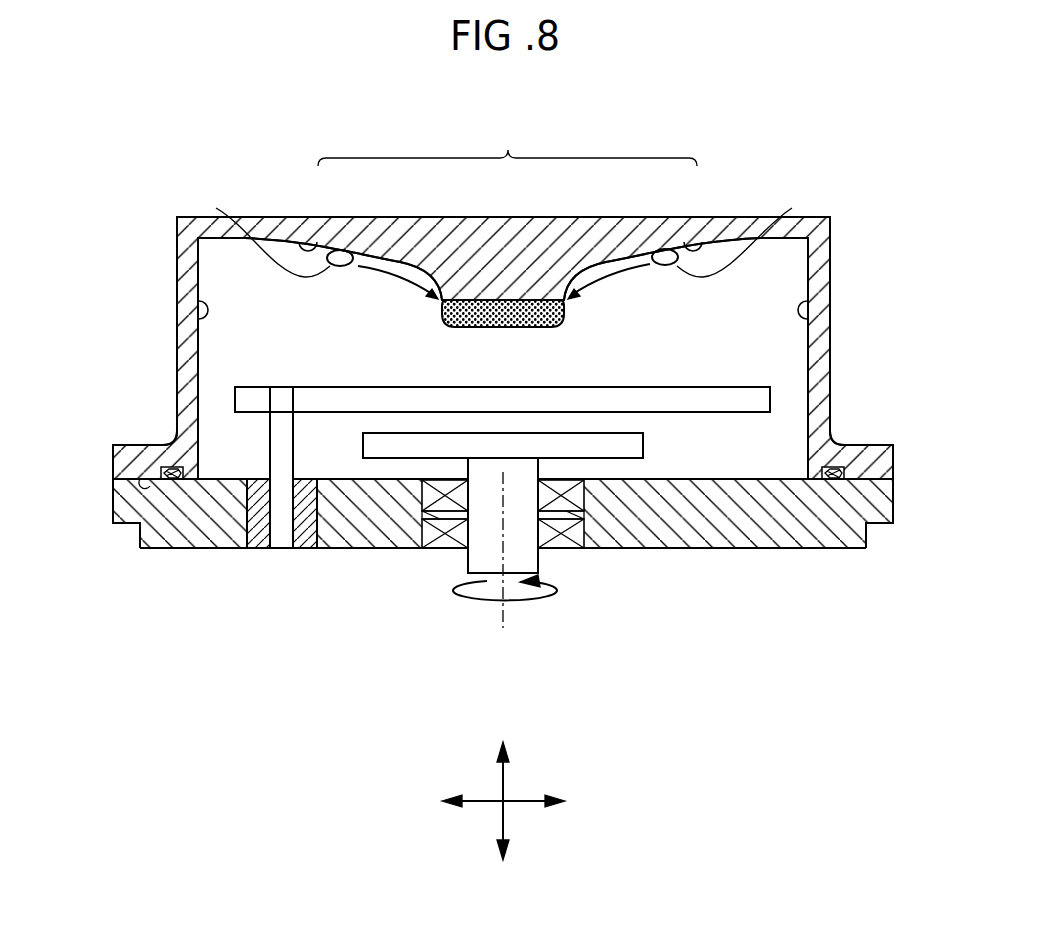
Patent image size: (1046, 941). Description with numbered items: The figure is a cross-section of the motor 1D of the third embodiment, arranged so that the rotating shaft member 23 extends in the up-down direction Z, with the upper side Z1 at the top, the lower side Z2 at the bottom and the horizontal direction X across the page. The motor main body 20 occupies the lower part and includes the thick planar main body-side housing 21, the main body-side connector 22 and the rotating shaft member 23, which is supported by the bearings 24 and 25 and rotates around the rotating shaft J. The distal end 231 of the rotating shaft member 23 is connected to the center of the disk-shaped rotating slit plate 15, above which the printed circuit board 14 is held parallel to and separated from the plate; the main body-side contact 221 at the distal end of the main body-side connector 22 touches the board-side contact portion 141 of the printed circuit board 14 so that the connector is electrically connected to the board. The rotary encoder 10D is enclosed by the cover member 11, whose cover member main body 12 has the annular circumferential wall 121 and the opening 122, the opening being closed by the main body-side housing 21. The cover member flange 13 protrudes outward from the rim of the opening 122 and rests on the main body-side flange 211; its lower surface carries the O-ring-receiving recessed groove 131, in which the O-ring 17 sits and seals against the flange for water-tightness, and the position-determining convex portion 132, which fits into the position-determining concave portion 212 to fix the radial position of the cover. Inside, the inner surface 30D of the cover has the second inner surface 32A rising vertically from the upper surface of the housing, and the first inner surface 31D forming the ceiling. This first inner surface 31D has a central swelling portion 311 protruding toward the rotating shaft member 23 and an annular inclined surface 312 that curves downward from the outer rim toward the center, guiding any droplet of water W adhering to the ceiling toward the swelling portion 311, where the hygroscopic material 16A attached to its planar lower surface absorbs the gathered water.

The motor 1D is at (858, 148).
The rotary encoder 10D is at (840, 276).
The cover member 11 is at (90, 383).
The cover member main body 12 is at (178, 390).
The cover member flange 13 is at (148, 446).
The printed circuit board 14 is at (720, 411).
The rotating slit plate 15 is at (641, 450).
The hygroscopic material 16A is at (566, 322).
The O-ring 17 is at (176, 480).
The motor main body 20 is at (498, 546).
The main body-side housing 21 is at (620, 547).
The main body-side connector 22 is at (268, 527).
The rotating shaft member 23 is at (470, 558).
The bearing 24 is at (416, 498).
The bearing 25 is at (415, 540).
The circumferential wall 121 is at (826, 400).
The opening 122 is at (806, 481).
The O-ring-receiving recessed groove 131 is at (162, 481).
The position-determining convex portion 132 is at (152, 484).
The board-side contact portion 141 is at (291, 405).
The main body-side flange 211 is at (122, 512).
The position-determining concave portion 212 is at (143, 478).
The main body-side contact 221 is at (295, 405).
The distal end 231 is at (520, 445).
The swelling portion 311 is at (514, 308).
The annular inclined surface 312 is at (312, 247).
The first inner surface 31D is at (503, 208).
The inner surface 30D is at (525, 219).
The second inner surface 32A is at (197, 310).
The droplet of water W is at (503, 232).
The rotating shaft J is at (508, 632).
The horizontal direction X is at (526, 803).
The up-down direction Z is at (506, 776).
The upper side Z1 is at (501, 725).
The lower side Z2 is at (501, 880).